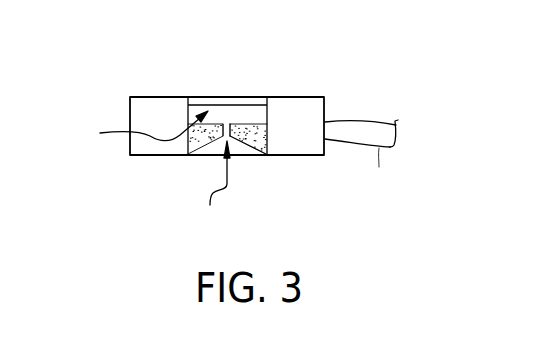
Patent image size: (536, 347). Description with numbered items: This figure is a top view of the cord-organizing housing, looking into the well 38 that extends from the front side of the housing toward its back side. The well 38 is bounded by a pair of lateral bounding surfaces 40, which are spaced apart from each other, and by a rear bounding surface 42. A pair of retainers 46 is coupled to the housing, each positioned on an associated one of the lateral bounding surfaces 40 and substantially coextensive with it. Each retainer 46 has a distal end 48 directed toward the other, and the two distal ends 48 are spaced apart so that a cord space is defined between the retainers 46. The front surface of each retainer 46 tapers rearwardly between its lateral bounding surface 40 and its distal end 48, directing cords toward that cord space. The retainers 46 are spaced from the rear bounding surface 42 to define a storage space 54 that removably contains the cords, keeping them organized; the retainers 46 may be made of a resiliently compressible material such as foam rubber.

The well 38 is at (213, 190).
The lateral bounding surfaces 40 is at (200, 101).
The rear bounding surface 42 is at (244, 106).
The retainers 46 is at (188, 154).
The distal end 48 is at (226, 127).
The storage space 54 is at (131, 130).